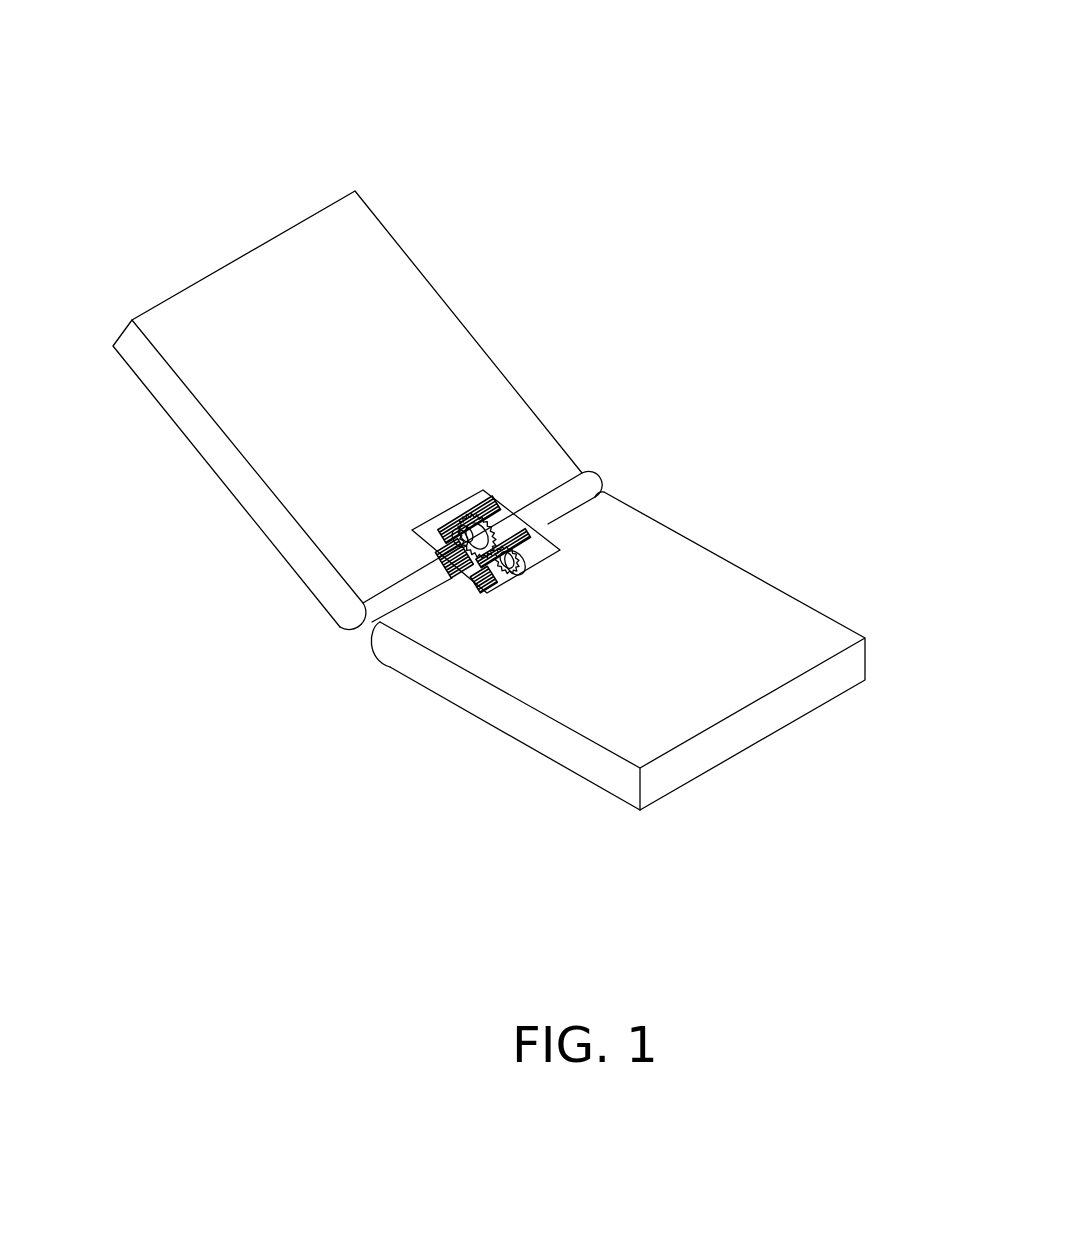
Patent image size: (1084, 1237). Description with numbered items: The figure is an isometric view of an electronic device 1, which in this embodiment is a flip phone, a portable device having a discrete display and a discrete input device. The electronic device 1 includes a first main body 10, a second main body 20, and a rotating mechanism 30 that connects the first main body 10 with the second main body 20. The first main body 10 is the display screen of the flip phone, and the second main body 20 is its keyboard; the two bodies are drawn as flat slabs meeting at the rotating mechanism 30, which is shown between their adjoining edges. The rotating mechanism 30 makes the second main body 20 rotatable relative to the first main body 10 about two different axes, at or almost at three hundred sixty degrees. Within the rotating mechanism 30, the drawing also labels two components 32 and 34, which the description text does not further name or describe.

The electronic device 1 is at (469, 29).
The first main body 10 is at (680, 567).
The second main body 20 is at (433, 330).
The rotating mechanism 30 is at (437, 515).
The first gear 32 is at (508, 570).
The second gear 34 is at (490, 498).